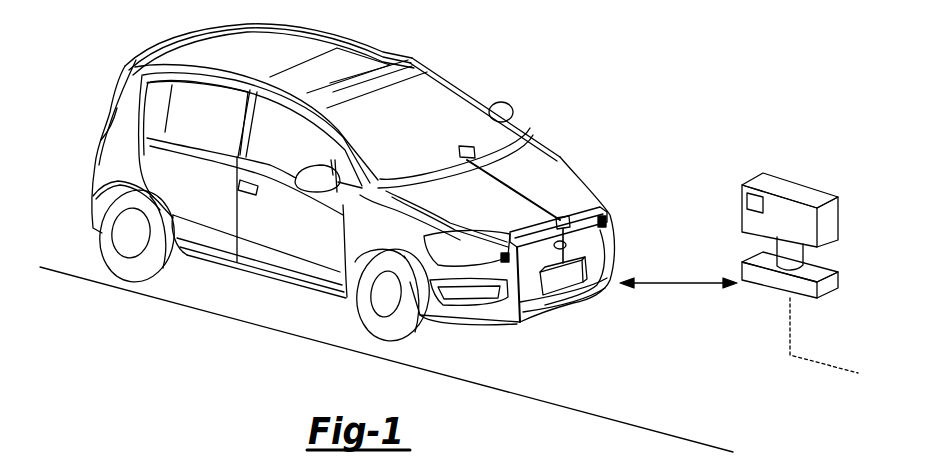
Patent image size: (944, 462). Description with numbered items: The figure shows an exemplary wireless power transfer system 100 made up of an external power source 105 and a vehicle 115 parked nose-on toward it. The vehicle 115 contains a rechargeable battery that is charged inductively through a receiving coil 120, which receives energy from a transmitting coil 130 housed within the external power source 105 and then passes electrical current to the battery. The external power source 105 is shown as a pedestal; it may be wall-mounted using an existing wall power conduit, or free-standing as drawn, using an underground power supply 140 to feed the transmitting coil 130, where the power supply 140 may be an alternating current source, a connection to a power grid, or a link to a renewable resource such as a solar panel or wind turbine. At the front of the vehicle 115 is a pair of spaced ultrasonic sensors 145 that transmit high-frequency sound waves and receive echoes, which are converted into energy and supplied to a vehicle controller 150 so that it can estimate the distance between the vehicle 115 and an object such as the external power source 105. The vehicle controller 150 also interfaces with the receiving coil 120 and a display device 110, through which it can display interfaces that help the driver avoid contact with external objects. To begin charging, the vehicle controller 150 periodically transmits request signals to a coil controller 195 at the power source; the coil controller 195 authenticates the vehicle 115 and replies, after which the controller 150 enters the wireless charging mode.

The wireless power transfer system 100 is at (700, 66).
The external power source 105 is at (795, 174).
The display device 110 is at (467, 146).
The vehicle 115 is at (470, 83).
The receiving coil 120 is at (567, 277).
The transmitting coil 130 is at (753, 222).
The underground power supply 140 is at (792, 326).
The sensors 145 is at (610, 229).
The vehicle controller 150 is at (553, 221).
The coil controller 195 is at (747, 202).